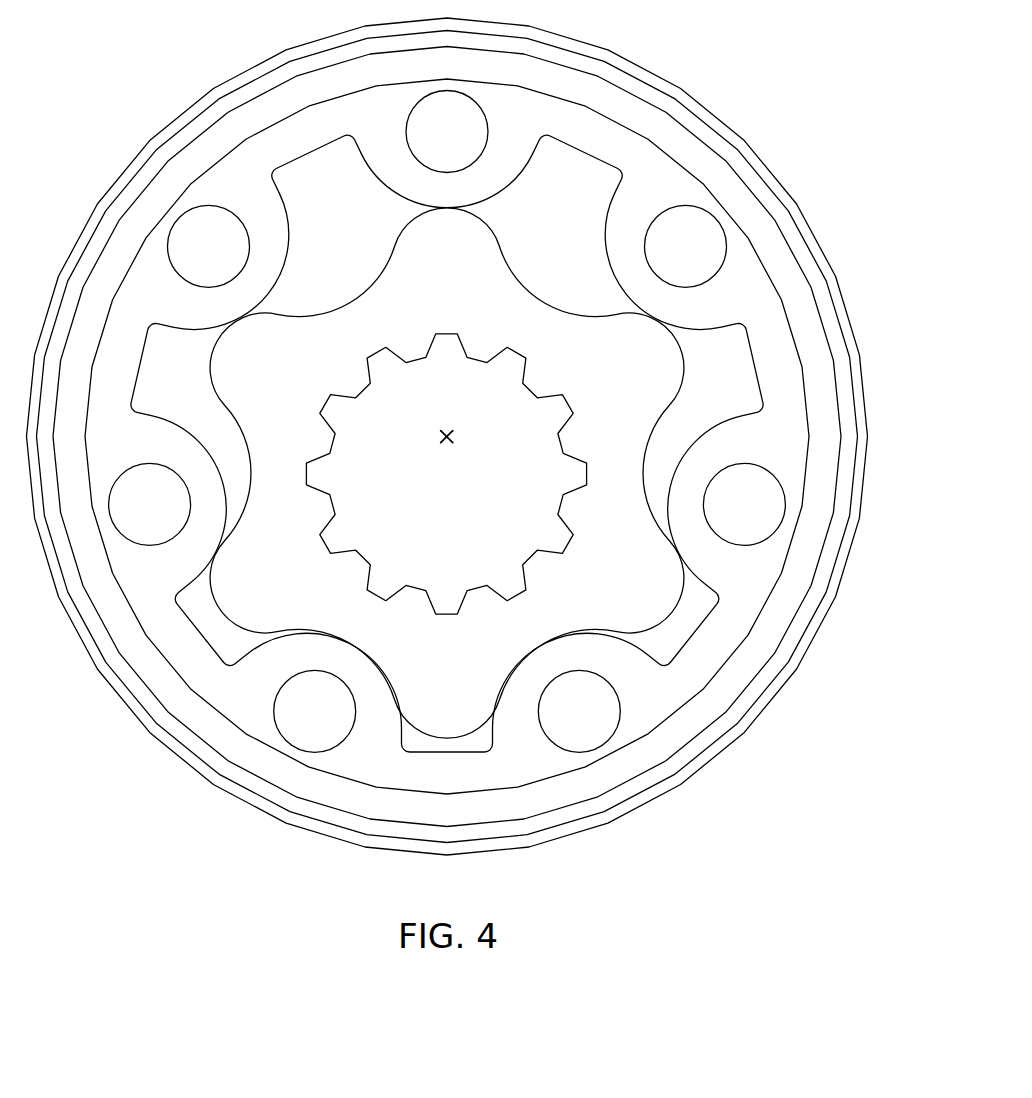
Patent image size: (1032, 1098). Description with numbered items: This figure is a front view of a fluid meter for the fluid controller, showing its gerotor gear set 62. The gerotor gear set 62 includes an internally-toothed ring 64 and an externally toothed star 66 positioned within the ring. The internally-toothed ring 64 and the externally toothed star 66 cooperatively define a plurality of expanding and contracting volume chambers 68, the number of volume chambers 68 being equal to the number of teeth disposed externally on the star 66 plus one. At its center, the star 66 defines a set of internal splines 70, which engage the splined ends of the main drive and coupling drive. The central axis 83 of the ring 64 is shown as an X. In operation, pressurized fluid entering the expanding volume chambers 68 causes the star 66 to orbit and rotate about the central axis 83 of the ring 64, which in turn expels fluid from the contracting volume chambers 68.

The gerotor gear set 62 is at (717, 86).
The internally-toothed ring 64 is at (810, 652).
The externally toothed star 66 is at (490, 287).
The volume chambers 68 is at (735, 380).
The internal splines 70 is at (495, 360).
The central axis 83 is at (442, 437).